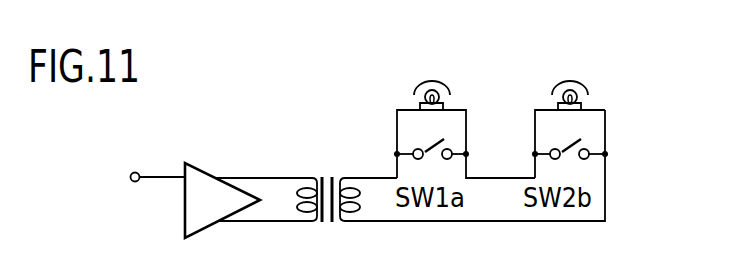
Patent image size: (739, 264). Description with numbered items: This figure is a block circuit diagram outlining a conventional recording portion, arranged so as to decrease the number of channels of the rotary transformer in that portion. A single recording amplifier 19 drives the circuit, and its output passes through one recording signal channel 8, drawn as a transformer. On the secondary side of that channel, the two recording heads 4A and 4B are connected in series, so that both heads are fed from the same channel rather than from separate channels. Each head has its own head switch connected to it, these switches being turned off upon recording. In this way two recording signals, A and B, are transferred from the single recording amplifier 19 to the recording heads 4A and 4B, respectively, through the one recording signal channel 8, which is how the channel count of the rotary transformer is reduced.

The recording amplifier 19 is at (205, 177).
The recording signal channel 8 is at (326, 176).
The recording head 4A is at (432, 79).
The recording head 4B is at (570, 79).